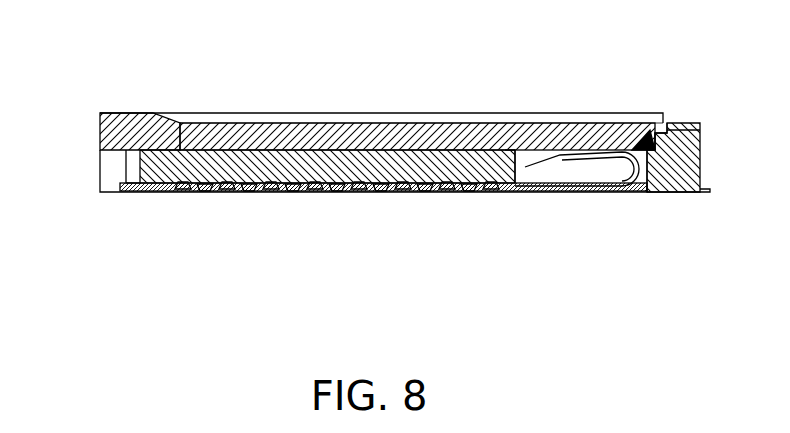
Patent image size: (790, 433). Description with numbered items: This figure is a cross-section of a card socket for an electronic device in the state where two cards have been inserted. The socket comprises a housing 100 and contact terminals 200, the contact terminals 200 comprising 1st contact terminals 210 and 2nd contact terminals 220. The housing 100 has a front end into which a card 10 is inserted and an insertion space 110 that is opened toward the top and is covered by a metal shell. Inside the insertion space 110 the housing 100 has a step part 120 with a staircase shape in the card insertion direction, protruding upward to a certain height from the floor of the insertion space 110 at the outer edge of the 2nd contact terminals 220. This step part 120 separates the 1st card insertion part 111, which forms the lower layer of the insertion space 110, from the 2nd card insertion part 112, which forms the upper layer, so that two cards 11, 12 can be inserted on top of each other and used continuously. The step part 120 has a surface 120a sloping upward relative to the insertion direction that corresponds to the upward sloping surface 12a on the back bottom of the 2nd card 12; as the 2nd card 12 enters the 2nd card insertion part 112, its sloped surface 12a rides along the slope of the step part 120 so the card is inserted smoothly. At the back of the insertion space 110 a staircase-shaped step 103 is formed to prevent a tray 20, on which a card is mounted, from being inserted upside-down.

The card 10 is at (315, 48).
The 1st card 11 is at (310, 160).
The 2nd card 12 is at (360, 135).
The sloped surface of the 2nd card 12a is at (664, 130).
The tray 20 is at (196, 113).
The housing 100 is at (703, 142).
The step 103 is at (653, 145).
The insertion space 110 is at (47, 123).
The 1st card insertion part 111 is at (100, 167).
The 2nd card insertion part 112 is at (100, 121).
The step part 120 is at (508, 148).
The sloping surface of the step part 120a is at (490, 148).
The contact terminals 200 is at (608, 238).
The 1st contact terminals 210 is at (318, 192).
The 2nd contact terminals 220 is at (619, 165).